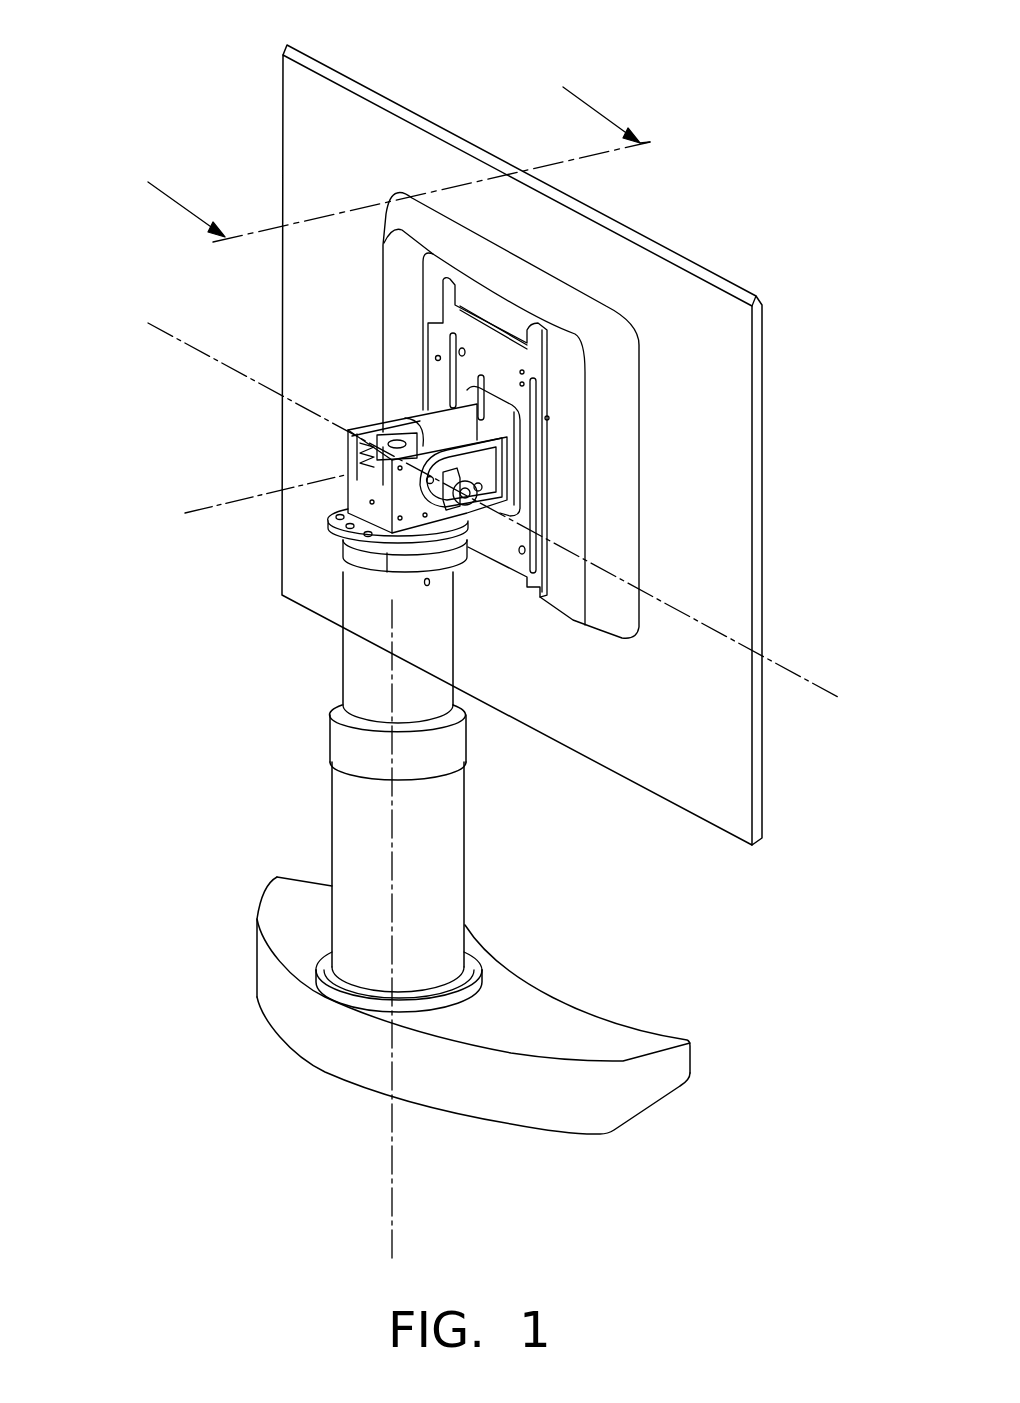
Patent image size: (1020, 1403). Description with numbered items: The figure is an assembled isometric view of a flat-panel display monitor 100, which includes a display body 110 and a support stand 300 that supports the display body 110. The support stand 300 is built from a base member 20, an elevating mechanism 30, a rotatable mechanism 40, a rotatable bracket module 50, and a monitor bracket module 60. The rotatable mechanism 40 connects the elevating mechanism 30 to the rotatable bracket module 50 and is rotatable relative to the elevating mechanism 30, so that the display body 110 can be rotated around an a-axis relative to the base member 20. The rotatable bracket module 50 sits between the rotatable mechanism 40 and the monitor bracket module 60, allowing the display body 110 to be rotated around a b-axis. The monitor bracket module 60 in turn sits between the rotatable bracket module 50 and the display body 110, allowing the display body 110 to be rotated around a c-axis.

The flat-panel display monitor 100 is at (428, 62).
The display body 110 is at (597, 218).
The support stand 300 is at (131, 376).
The monitor bracket module 60 is at (470, 407).
The rotatable bracket module 50 is at (367, 540).
The rotatable mechanism 40 is at (407, 558).
The elevating mechanism 30 is at (353, 824).
The base member 20 is at (297, 907).